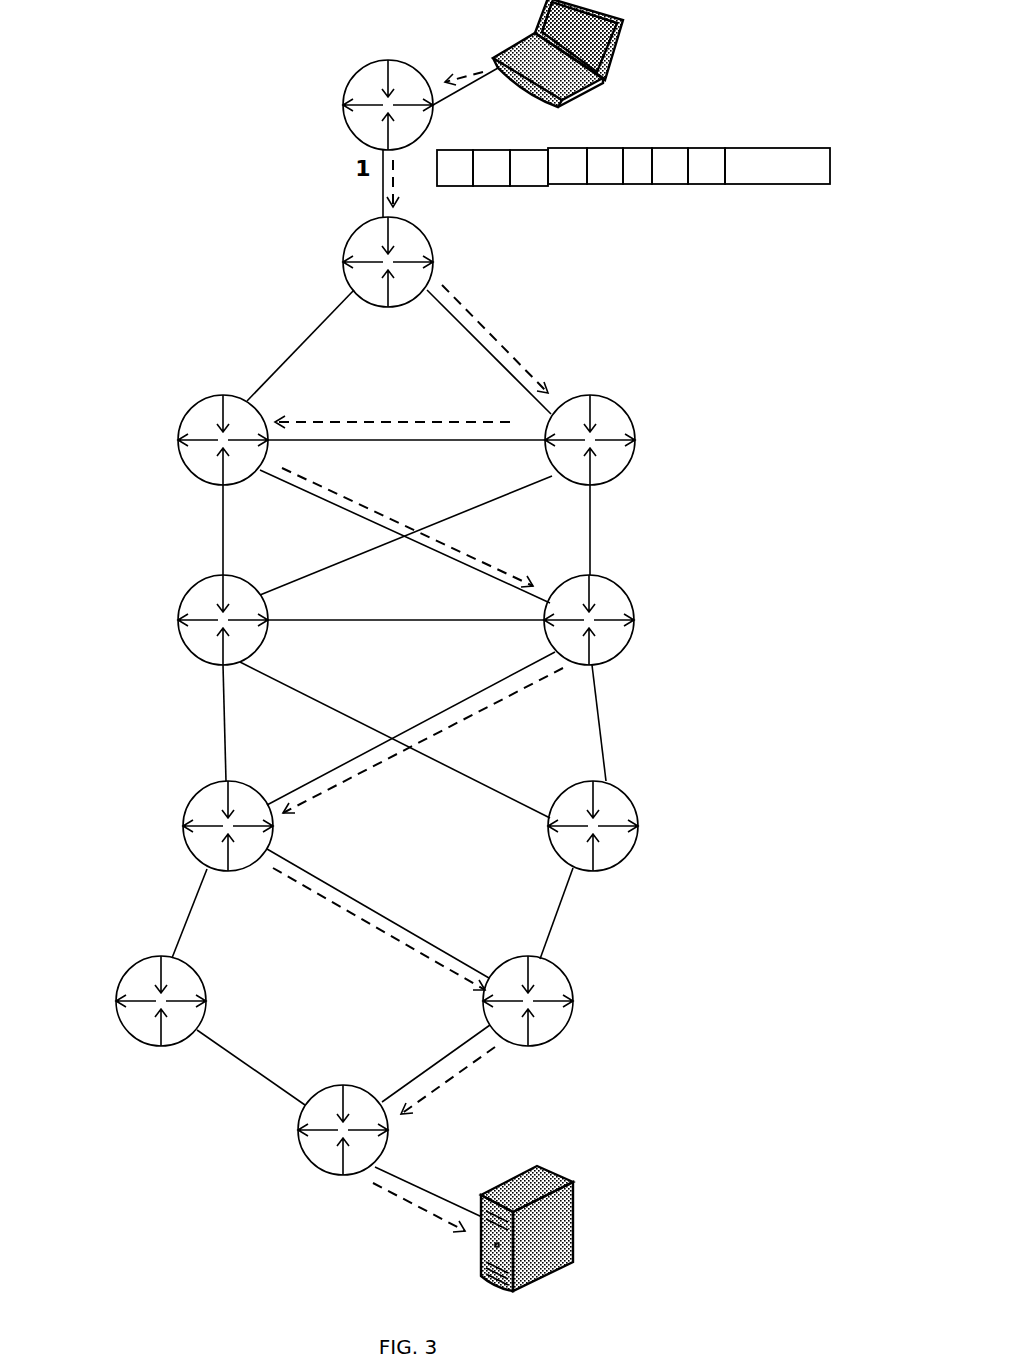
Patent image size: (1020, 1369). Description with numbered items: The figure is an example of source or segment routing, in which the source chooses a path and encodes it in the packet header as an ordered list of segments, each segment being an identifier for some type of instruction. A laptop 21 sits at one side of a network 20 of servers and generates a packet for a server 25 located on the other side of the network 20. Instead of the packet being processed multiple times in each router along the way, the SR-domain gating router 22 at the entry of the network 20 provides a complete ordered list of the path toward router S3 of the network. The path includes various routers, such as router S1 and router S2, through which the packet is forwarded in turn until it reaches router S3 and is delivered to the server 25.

The network 20 is at (364, 708).
The laptop 21 is at (575, 107).
The SR-domain gating router 22 is at (345, 92).
The server 25 is at (552, 1168).
The router S1 is at (626, 416).
The router S2 is at (190, 797).
The router S3 is at (310, 1167).